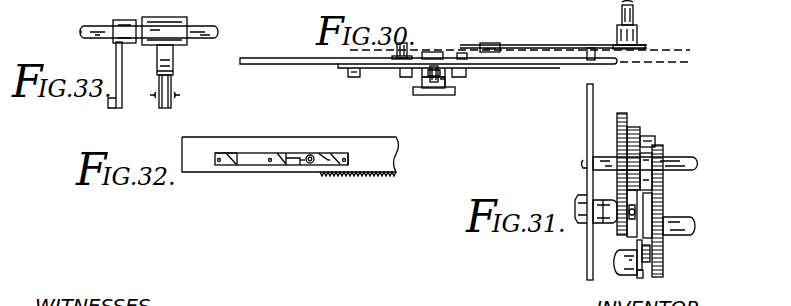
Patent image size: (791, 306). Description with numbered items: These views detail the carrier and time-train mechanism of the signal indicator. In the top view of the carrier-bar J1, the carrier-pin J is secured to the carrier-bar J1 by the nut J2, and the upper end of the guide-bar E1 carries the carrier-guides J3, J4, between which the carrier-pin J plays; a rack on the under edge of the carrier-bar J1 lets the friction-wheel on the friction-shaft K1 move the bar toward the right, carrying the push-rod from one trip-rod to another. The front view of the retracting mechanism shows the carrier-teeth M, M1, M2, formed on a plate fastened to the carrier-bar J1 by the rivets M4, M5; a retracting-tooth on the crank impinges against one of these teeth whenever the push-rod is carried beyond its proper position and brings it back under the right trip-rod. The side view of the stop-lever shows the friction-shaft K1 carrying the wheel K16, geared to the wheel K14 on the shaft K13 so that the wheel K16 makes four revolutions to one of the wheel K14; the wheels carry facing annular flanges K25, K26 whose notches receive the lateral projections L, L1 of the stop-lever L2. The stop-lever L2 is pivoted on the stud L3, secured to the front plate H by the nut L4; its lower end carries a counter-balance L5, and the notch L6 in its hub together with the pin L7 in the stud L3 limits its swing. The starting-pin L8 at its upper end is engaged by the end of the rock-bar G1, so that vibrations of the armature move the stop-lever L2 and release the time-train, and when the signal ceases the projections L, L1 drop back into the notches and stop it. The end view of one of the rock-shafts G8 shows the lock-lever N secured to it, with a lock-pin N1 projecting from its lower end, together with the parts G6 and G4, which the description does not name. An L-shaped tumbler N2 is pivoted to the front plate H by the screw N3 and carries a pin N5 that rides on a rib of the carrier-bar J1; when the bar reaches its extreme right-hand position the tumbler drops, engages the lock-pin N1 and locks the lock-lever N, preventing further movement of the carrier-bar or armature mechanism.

In FIG. 33, the rock-shaft G8 is at (200, 27).
In FIG. 30, the rock-shaft G8 is at (636, 12).
In FIG. 33, the cylinder G6 is at (174, 63).
In FIG. 33, the cross pin G4 is at (180, 95).
In FIG. 33, the rock-bar G1 is at (160, 106).
In FIG. 33, the lock-lever N is at (123, 70).
In FIG. 30, the lock-lever N is at (638, 30).
In FIG. 33, the lock-pin N1 is at (110, 104).
In FIG. 30, the lock-pin N1 is at (631, 50).
In FIG. 30, the L-shaped tumbler N2 is at (540, 34).
In FIG. 30, the screw N3 is at (490, 43).
In FIG. 30, the pin N5 is at (585, 58).
In FIG. 30, the carrier-pin J is at (431, 71).
In FIG. 32, the carrier-pin J is at (313, 155).
In FIG. 30, the carrier-bar J1 is at (294, 64).
In FIG. 32, the carrier-bar J1 is at (290, 156).
In FIG. 30, the nut J2 is at (428, 47).
In FIG. 30, the carrier-guide J3 is at (433, 89).
In FIG. 30, the carrier-guide J4 is at (449, 91).
In FIG. 30, the guide-bar E1 is at (456, 92).
In FIG. 30, the carrier-tooth M is at (351, 86).
In FIG. 32, the carrier-tooth M is at (237, 166).
In FIG. 30, the carrier-tooth M1 is at (427, 72).
In FIG. 32, the carrier-tooth M1 is at (286, 167).
In FIG. 30, the carrier-tooth M2 is at (464, 71).
In FIG. 32, the carrier-tooth M2 is at (339, 168).
In FIG. 30, the rivet M4 is at (346, 70).
In FIG. 32, the rivet M4 is at (228, 153).
In FIG. 30, the rivet M5 is at (388, 69).
In FIG. 32, the rivet M5 is at (283, 153).
In FIG. 31, the front plate H is at (587, 132).
In FIG. 31, the friction-shaft K1 is at (698, 160).
In FIG. 31, the shaft K13 is at (697, 225).
In FIG. 31, the wheel K14 is at (651, 256).
In FIG. 31, the wheel K16 is at (618, 121).
In FIG. 31, the annular flange K25 is at (634, 130).
In FIG. 31, the annular flange K26 is at (654, 207).
In FIG. 31, the lateral projection L is at (645, 162).
In FIG. 31, the lateral projection L1 is at (660, 267).
In FIG. 31, the stop-lever L2 is at (640, 278).
In FIG. 31, the stud L3 is at (607, 200).
In FIG. 31, the nut L4 is at (580, 226).
In FIG. 31, the counter-balance L5 is at (622, 275).
In FIG. 31, the notch L6 is at (631, 230).
In FIG. 31, the pin L7 is at (628, 216).
In FIG. 31, the starting-pin L8 is at (655, 140).